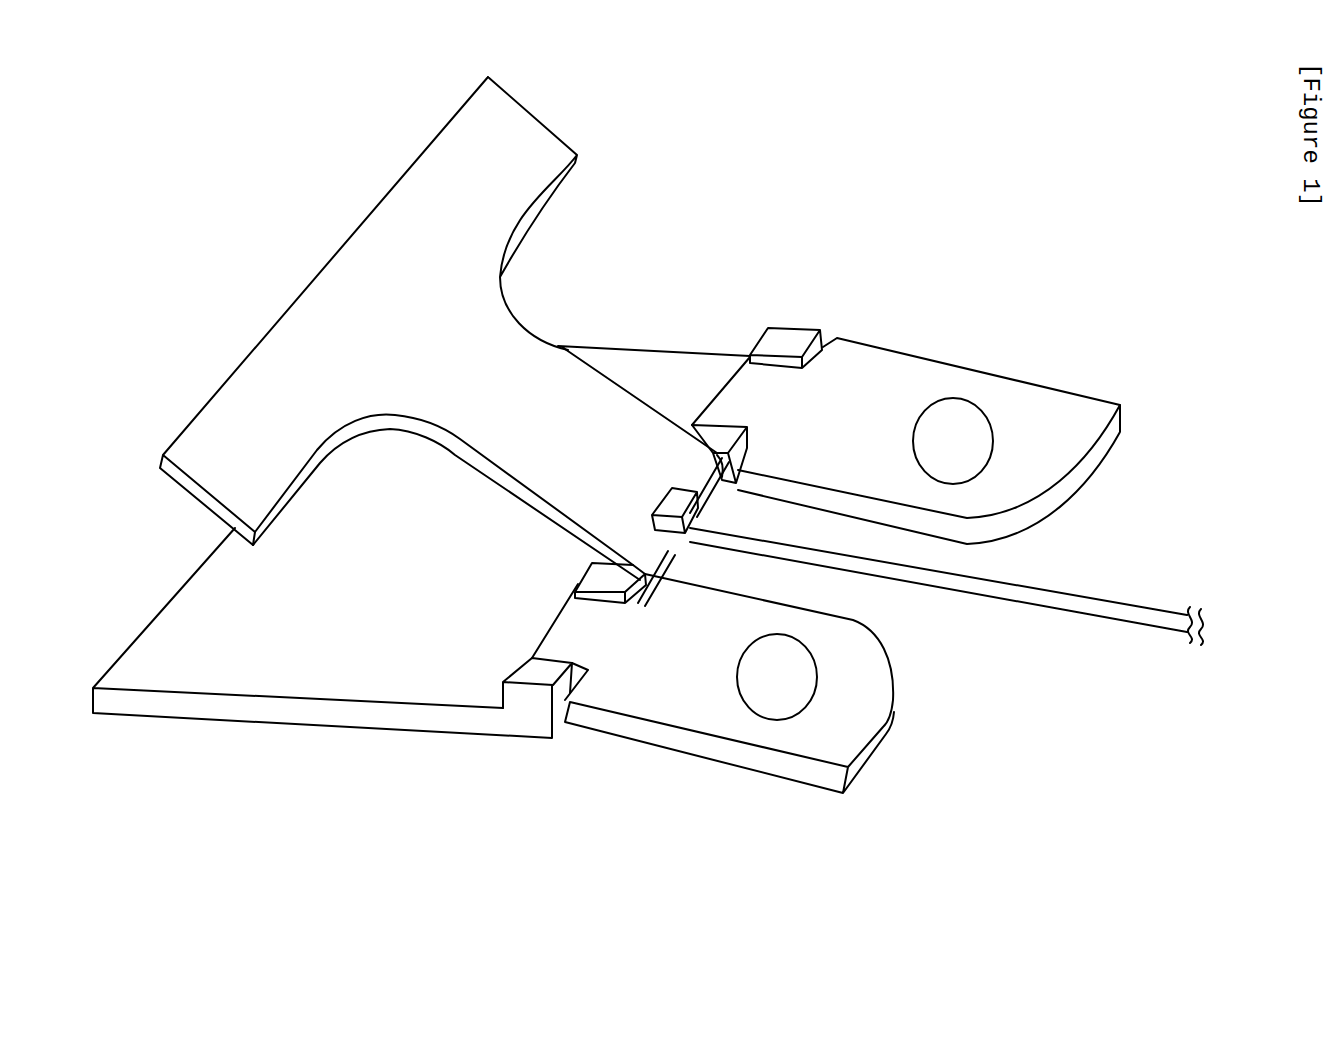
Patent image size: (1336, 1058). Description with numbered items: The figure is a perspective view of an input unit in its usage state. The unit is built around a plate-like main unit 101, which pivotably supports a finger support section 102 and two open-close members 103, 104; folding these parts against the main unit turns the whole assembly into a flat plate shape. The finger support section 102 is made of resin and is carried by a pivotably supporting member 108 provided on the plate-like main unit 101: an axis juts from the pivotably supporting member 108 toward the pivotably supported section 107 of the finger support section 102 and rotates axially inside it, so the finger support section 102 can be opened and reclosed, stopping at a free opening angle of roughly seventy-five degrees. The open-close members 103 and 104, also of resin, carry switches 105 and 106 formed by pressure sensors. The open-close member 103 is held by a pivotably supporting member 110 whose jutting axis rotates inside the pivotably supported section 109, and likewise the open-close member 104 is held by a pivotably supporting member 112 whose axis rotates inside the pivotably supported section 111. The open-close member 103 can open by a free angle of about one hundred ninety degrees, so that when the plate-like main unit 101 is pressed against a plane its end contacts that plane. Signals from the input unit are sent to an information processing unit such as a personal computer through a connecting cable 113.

The plate-like main unit 101 is at (275, 650).
The finger support section 102 is at (518, 135).
The open-close member 103 is at (667, 698).
The open-close member 104 is at (908, 375).
The switch 105 is at (775, 703).
The switch 106 is at (958, 420).
The pivotably supported section 107 is at (703, 478).
The pivotably supporting member 108 is at (678, 507).
The pivotably supported section 109 is at (580, 628).
The pivotably supporting member 110 is at (600, 582).
The pivotably supported section 111 is at (758, 385).
The pivotably supporting member 112 is at (780, 343).
The connecting cable 113 is at (1088, 609).